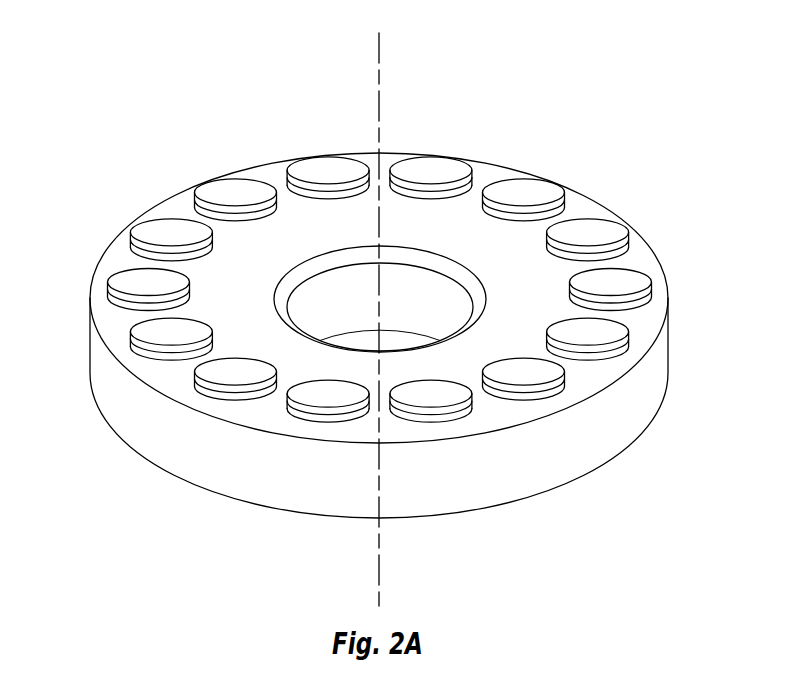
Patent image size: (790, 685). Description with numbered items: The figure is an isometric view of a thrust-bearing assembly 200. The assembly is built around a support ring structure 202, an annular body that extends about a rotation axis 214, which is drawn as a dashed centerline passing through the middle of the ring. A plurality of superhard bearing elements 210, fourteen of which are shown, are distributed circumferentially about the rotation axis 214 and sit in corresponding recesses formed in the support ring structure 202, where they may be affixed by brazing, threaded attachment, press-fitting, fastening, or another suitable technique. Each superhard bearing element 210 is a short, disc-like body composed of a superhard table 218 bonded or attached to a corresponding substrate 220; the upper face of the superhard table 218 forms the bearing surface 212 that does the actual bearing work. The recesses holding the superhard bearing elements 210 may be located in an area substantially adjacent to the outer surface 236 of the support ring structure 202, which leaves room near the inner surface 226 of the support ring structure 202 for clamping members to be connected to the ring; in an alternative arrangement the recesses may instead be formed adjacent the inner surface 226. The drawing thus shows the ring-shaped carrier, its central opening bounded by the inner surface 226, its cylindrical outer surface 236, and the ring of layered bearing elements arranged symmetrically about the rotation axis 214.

The thrust-bearing assembly 200 is at (78, 175).
The support ring structure 202 is at (672, 313).
The superhard bearing elements 210 is at (455, 162).
The bearing surface 212 is at (425, 175).
The rotation axis 214 is at (378, 52).
The superhard table 218 is at (465, 193).
The substrate 220 is at (466, 192).
The inner surface 226 is at (413, 293).
The outer surface 236 is at (641, 394).